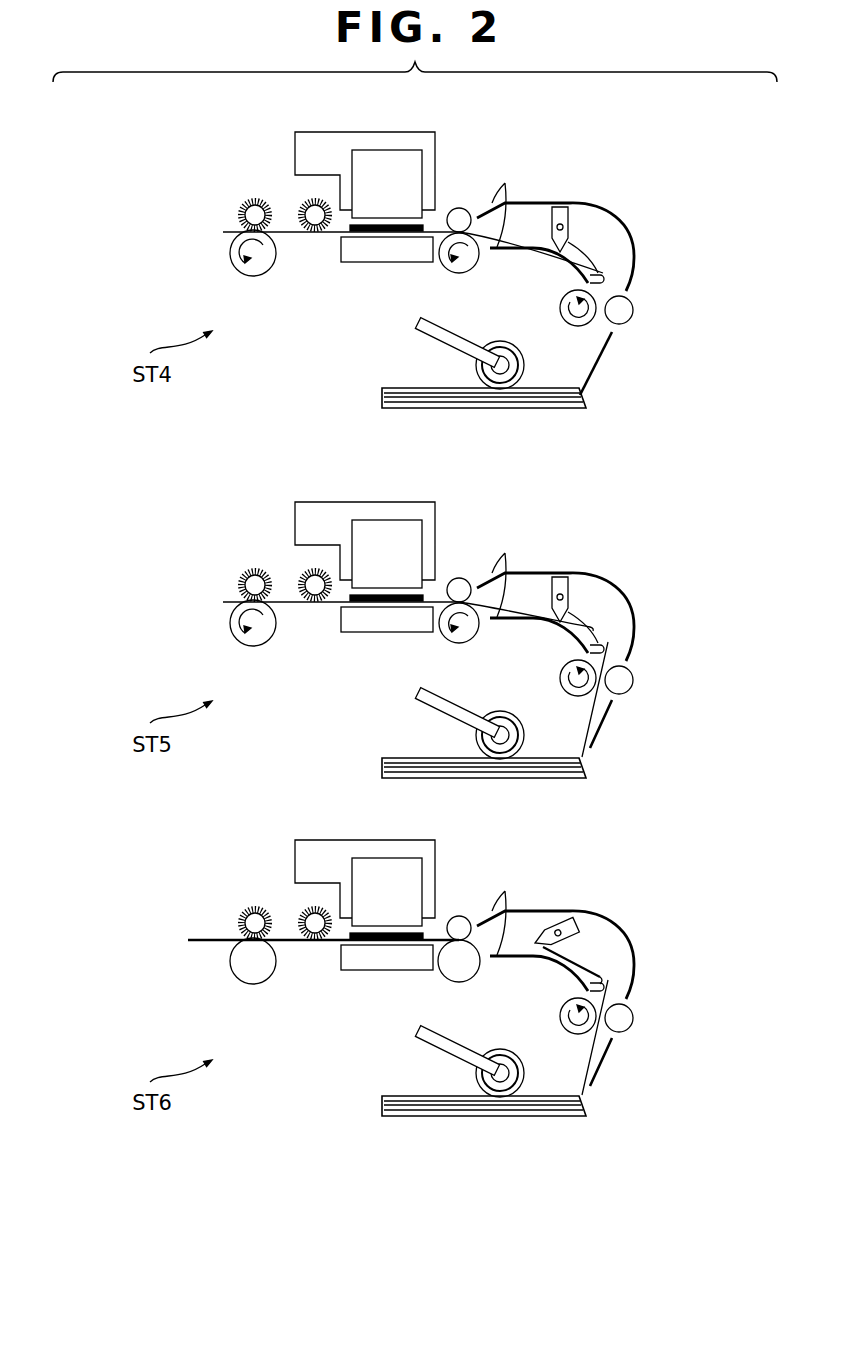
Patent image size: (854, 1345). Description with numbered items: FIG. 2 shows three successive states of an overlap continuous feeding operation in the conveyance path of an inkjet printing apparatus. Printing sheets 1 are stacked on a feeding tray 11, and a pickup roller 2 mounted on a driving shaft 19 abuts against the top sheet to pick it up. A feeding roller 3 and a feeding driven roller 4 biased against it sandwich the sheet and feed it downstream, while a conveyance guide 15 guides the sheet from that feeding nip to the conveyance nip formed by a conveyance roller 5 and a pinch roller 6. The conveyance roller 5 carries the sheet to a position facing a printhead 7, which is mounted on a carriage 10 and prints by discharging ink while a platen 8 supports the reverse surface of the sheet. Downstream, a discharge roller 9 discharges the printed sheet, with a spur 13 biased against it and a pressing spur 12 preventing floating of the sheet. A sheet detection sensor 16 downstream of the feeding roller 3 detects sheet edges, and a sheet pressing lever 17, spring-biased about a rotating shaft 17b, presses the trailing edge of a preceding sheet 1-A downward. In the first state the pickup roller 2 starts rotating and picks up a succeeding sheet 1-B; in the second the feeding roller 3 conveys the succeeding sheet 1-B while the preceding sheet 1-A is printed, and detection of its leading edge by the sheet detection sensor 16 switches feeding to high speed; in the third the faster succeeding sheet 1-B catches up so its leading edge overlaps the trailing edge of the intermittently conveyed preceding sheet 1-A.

The printing sheet 1 is at (405, 1100).
The preceding sheet 1-A is at (210, 941).
The succeeding sheet 1-B is at (614, 990).
The pickup roller 2 is at (500, 1049).
The feeding roller 3 is at (565, 1010).
The feeding driven roller 4 is at (633, 1018).
The conveyance roller 5 is at (460, 982).
The pinch roller 6 is at (461, 916).
The printhead 7 is at (392, 858).
The platen 8 is at (383, 970).
The discharge roller 9 is at (254, 984).
The carriage 10 is at (295, 848).
The feeding tray 11 is at (553, 1116).
The spur 12 is at (303, 913).
The spur 13 is at (240, 922).
The conveyance guide 15 is at (505, 894).
The sheet detection sensor 16 is at (578, 987).
The sheet pressing lever 17 is at (568, 920).
The rotating shaft 17b is at (583, 933).
The driving shaft 19 is at (520, 1063).